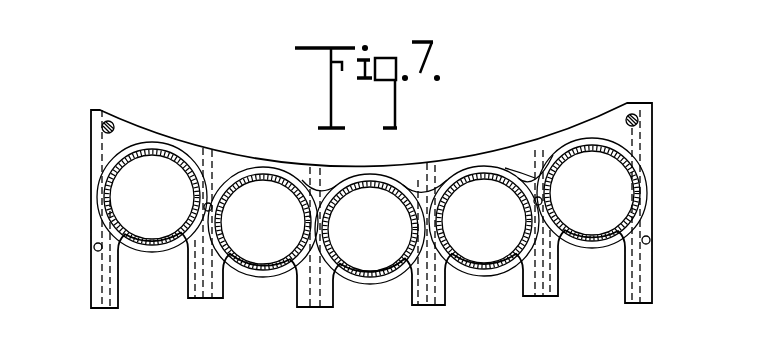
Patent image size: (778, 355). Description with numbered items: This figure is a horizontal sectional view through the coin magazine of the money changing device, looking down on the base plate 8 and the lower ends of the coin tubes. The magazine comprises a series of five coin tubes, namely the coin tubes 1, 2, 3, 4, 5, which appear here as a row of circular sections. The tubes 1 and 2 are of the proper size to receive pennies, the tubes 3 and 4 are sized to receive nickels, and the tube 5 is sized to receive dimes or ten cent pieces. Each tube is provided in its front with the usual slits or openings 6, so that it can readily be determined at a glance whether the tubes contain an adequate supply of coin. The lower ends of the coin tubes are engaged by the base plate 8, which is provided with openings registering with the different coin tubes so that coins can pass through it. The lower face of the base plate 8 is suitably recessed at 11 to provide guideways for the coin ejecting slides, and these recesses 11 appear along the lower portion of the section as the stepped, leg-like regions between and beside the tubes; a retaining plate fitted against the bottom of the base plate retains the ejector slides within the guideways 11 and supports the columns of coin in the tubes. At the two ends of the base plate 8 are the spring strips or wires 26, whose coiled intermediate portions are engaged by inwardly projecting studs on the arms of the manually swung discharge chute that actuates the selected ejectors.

The coin tube 1 is at (175, 153).
The coin tube 2 is at (257, 170).
The coin tube 3 is at (323, 218).
The coin tube 4 is at (438, 207).
The coin tube 5 is at (553, 177).
The slits or openings 6 is at (158, 220).
The base plate 8 is at (521, 158).
The recesses (guideways) 11 is at (297, 295).
The spring strips or wires 26 is at (93, 247).